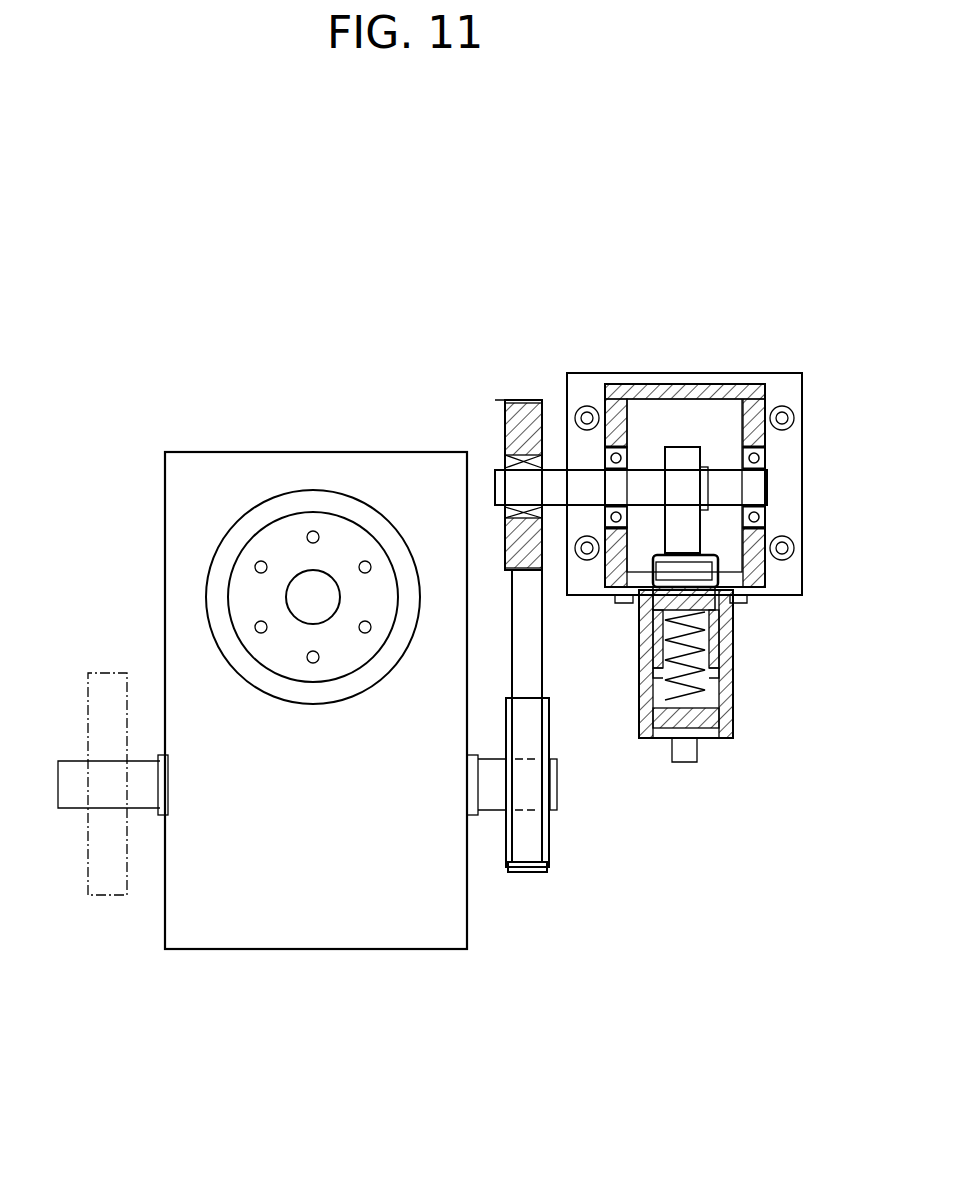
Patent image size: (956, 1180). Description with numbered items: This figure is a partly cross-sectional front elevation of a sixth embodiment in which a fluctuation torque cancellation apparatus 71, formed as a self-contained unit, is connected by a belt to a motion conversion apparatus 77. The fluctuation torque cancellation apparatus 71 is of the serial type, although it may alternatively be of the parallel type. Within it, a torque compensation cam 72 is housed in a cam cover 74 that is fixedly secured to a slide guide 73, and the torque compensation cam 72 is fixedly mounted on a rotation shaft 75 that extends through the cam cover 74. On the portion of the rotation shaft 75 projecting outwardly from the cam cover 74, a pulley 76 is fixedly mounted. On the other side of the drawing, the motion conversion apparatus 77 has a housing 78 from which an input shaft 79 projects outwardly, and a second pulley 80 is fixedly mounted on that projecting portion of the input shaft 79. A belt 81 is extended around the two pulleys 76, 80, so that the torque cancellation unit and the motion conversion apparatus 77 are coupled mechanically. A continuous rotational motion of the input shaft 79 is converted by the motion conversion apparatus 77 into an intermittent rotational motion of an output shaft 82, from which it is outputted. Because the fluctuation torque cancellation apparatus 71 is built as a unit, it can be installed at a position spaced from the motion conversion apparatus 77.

The fluctuation torque cancellation apparatus 71 is at (663, 372).
The torque compensation cam 72 is at (688, 455).
The slide guide 73 is at (755, 568).
The cam cover 74 is at (617, 397).
The rotation shaft 75 is at (762, 490).
The pulley 76 is at (515, 417).
The motion conversion apparatus 77 is at (313, 406).
The housing 78 is at (238, 920).
The input shaft 79 is at (493, 800).
The pulley 80 is at (553, 840).
The belt 81 is at (533, 666).
The output shaft 82 is at (300, 585).